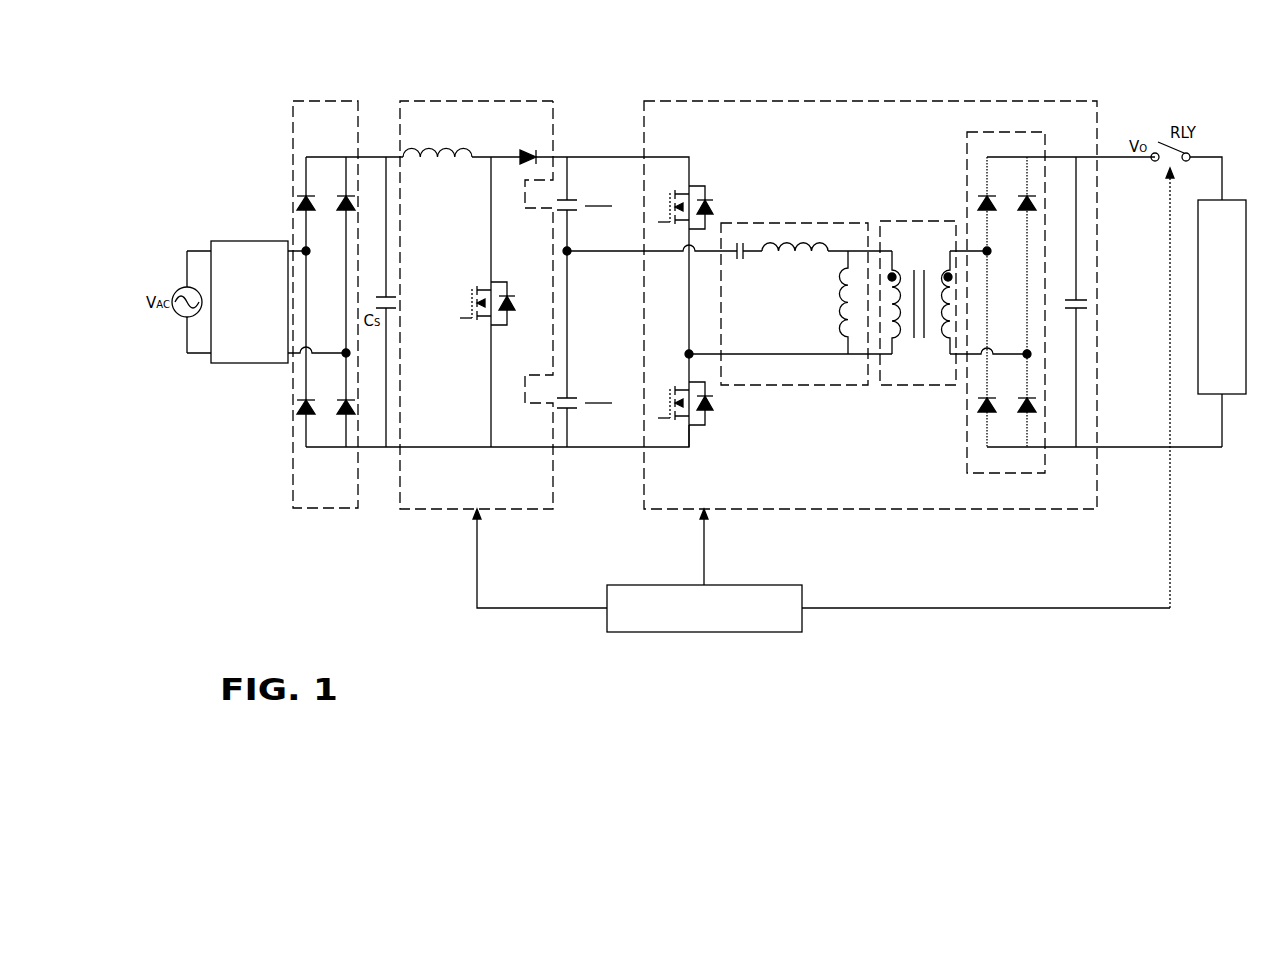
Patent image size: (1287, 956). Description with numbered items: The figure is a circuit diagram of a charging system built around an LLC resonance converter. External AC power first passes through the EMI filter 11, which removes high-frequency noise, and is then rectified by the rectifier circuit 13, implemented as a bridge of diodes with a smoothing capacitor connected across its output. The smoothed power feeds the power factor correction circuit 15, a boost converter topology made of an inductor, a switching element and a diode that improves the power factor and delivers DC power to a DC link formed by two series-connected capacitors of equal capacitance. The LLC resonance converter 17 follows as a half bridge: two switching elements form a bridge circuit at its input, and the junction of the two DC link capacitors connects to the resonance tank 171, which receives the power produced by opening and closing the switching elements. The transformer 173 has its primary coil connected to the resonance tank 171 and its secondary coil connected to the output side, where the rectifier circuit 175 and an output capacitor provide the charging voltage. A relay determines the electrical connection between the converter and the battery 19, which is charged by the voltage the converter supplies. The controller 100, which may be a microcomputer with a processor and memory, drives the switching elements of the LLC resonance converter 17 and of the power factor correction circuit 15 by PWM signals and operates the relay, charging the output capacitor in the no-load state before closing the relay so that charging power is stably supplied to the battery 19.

The EMI filter 11 is at (265, 241).
The rectifier circuit 13 is at (326, 101).
The power factor correction circuit 15 is at (468, 101).
The LLC resonance converter 17 is at (933, 301).
The resonance tank 171 is at (802, 385).
The transformer 173 is at (917, 385).
The rectifier circuit 175 is at (1008, 473).
The battery 19 is at (1236, 200).
The controller 100 is at (802, 627).